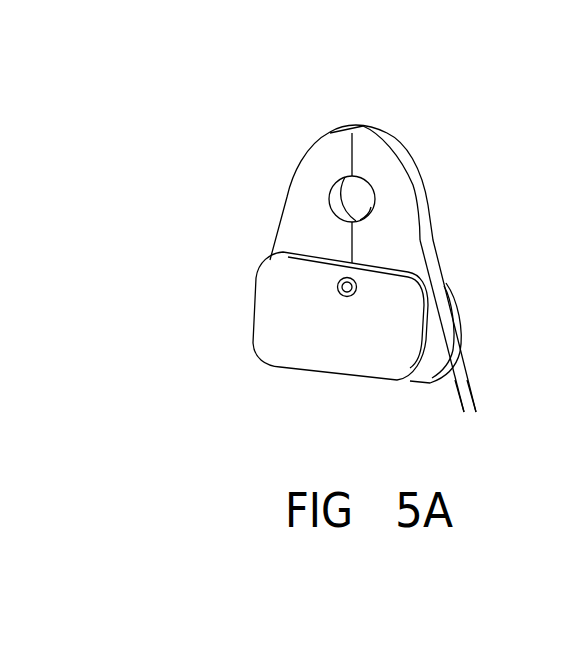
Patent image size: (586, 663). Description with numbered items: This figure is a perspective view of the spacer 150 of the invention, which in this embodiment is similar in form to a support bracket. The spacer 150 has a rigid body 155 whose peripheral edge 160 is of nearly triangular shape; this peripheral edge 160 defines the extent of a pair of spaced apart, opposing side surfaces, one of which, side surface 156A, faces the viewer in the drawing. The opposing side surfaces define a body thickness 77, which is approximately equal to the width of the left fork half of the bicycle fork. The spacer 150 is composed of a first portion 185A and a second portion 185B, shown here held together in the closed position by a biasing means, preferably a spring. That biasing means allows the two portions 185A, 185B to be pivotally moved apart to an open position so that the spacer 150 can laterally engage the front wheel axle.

The spacer 150 is at (250, 342).
The rigid body 155 is at (410, 234).
The peripheral edge 160 is at (405, 157).
The first portion 185A is at (343, 131).
The second portion 185B is at (378, 129).
The side surface 156A is at (342, 246).
The body thickness 77 is at (417, 437).